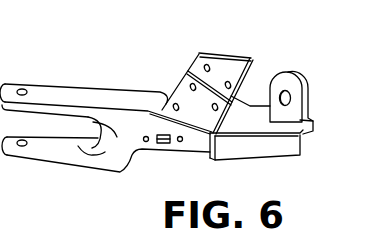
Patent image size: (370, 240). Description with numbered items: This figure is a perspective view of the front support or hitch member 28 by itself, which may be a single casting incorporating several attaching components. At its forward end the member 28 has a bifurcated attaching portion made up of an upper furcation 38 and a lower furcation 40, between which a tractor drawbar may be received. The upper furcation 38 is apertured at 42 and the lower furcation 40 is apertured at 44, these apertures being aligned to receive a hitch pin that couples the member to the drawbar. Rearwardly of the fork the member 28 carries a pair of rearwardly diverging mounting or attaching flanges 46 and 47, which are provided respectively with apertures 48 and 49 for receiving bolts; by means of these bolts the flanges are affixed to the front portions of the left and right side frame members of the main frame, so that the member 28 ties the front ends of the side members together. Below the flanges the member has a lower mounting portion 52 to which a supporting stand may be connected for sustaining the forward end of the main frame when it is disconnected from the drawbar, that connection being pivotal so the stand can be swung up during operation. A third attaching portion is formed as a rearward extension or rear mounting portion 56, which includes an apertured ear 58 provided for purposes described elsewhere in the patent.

The front support or hitch member 28 is at (143, 87).
The upper furcation 38 is at (60, 88).
The lower furcation 40 is at (70, 148).
The aperture in upper furcation 42 is at (25, 88).
The aperture in lower furcation 44 is at (25, 146).
The mounting flange 46 is at (203, 53).
The mounting flange 47 is at (218, 105).
The apertures in mounting flange 48 is at (229, 82).
The apertures in mounting flange 49 is at (174, 104).
The lower mounting portion 52 is at (178, 142).
The rear mounting portion 56 is at (250, 122).
The apertured ear 58 is at (295, 88).